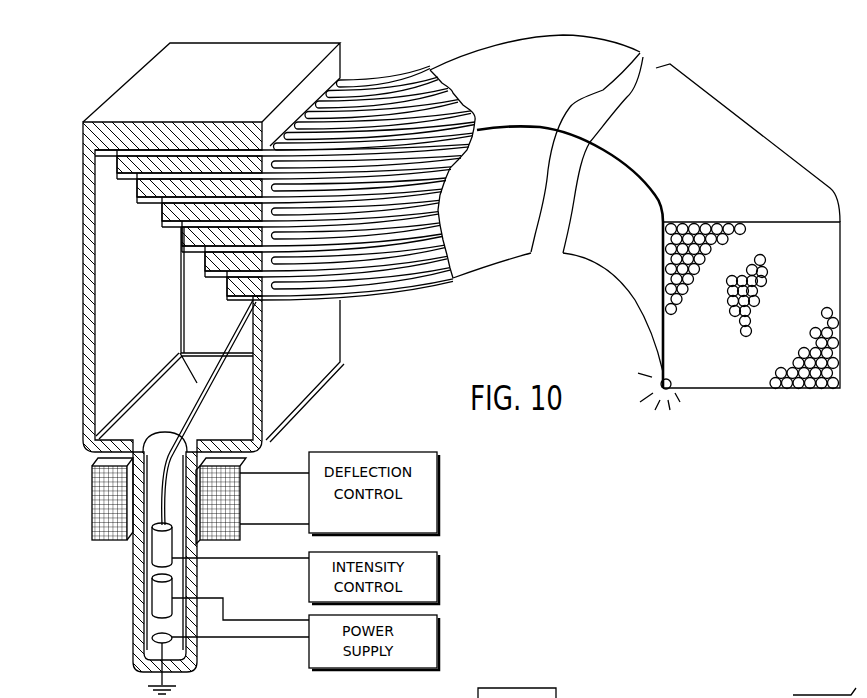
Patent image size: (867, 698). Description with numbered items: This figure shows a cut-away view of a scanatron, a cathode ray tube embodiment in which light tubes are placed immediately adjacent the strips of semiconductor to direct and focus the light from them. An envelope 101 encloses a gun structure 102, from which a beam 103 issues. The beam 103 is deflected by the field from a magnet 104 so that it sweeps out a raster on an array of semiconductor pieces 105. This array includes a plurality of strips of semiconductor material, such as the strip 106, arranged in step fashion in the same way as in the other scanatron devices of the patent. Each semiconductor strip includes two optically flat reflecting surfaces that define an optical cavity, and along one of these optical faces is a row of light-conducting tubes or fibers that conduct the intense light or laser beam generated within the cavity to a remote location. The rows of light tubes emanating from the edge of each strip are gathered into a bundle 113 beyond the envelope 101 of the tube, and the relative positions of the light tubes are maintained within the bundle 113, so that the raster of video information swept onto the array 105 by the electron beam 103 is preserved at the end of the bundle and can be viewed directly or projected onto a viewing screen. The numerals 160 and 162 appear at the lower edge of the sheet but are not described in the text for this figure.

The envelope 101 is at (88, 324).
The gun structure 102 is at (139, 603).
The beam 103 is at (180, 353).
The magnet 104 is at (95, 512).
The array of semiconductor pieces 105 is at (137, 216).
The strip of semiconductor material 106 is at (222, 310).
The bundle 113 is at (414, 296).
The base unit 160 is at (745, 697).
The lead 162 is at (826, 695).